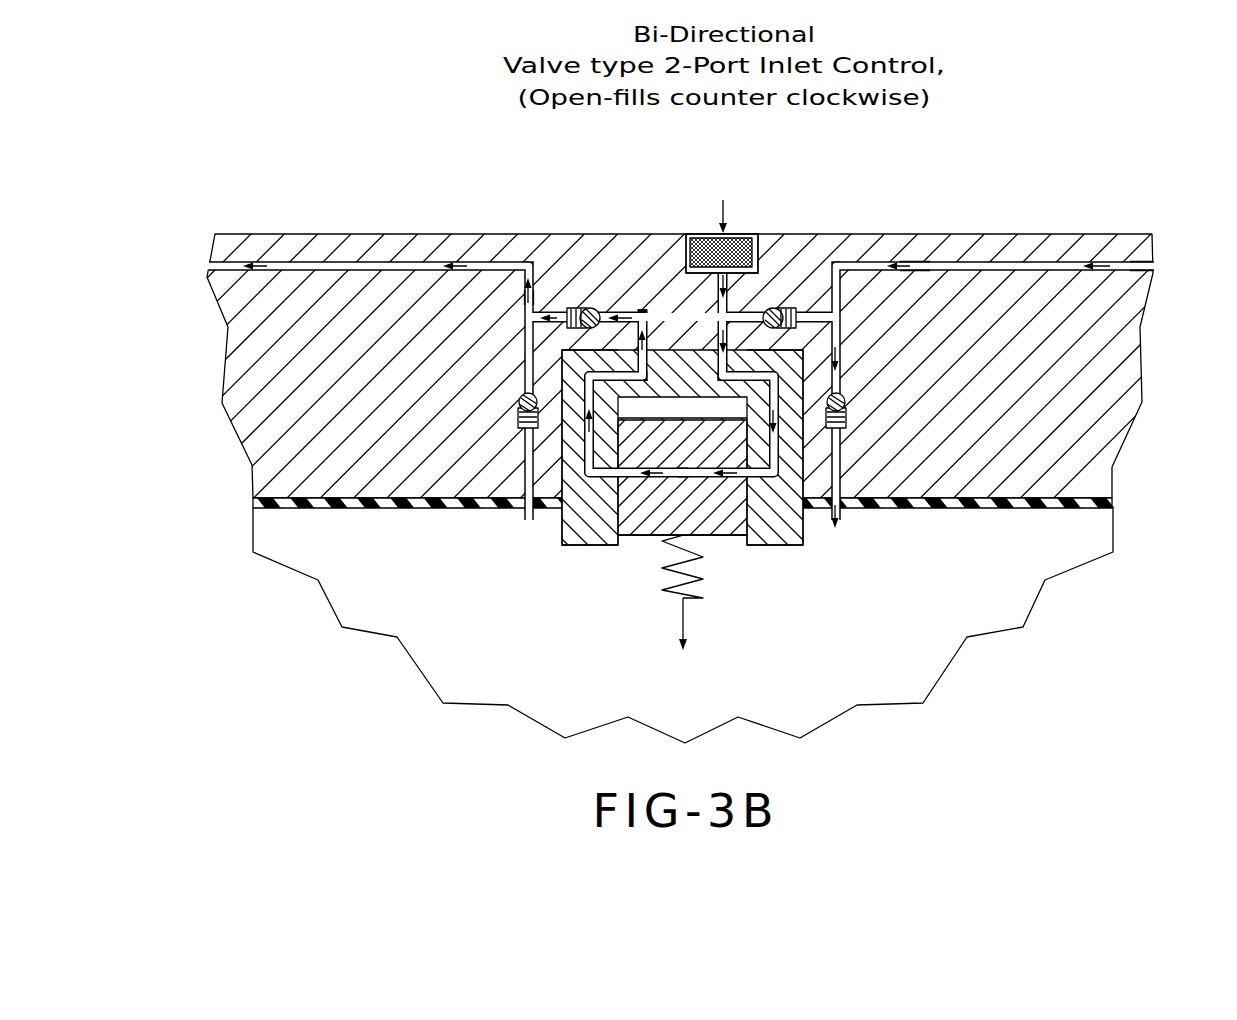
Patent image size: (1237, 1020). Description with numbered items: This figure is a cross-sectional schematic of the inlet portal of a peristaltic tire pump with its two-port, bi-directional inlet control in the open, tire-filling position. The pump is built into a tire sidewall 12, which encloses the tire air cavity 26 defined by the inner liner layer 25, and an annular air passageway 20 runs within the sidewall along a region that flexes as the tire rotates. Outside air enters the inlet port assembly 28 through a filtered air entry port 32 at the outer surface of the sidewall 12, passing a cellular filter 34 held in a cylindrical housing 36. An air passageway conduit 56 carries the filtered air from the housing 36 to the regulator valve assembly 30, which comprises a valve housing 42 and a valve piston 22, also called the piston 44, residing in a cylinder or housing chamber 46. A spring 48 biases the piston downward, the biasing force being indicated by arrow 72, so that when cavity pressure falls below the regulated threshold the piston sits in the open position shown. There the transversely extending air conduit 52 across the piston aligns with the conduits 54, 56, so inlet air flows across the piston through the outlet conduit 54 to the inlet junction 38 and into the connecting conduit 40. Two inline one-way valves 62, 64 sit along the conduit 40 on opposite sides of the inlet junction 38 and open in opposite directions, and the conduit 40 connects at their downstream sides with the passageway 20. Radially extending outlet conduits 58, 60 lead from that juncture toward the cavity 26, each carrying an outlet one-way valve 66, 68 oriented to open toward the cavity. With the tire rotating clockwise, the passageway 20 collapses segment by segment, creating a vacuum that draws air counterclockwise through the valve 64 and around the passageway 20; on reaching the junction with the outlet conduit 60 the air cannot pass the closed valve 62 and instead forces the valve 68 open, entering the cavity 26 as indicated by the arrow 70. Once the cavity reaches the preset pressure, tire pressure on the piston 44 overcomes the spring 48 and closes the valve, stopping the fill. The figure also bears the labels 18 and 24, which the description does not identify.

The sidewall 12 is at (254, 234).
The main fluid passage 18 is at (326, 258).
The annular air passageway 20 is at (1170, 260).
The valve piston 22 is at (530, 347).
The right vertical passage 24 is at (842, 304).
The tire inner liner layer 25 is at (300, 508).
The tire air cavity 26 is at (472, 685).
The inlet port assembly 28 is at (774, 219).
The regulator valve assembly 30 is at (771, 575).
The filtered air entry port 32 is at (743, 224).
The cellular filter 34 is at (710, 236).
The cylindrical housing 36 is at (687, 314).
The inlet junction 38 is at (632, 304).
The connecting conduit 40 is at (638, 314).
The valve housing 42 is at (778, 527).
The piston 44 is at (655, 518).
The housing chamber 46 is at (738, 553).
The spring 48 is at (692, 598).
The transversely extending air conduit 52 is at (628, 480).
The outlet conduit 54 is at (592, 445).
The air passageway conduit 56 is at (778, 442).
The radially extending outlet conduit passageway 58 is at (512, 297).
The radially extending outlet conduit passageway 60 is at (911, 258).
The inline one-way valve 62 is at (784, 312).
The inline one-way valve 64 is at (571, 308).
The outlet one-way valve 66 is at (528, 432).
The outlet one-way valve 68 is at (848, 422).
The arrow 70 is at (276, 260).
The arrow 72 is at (678, 607).